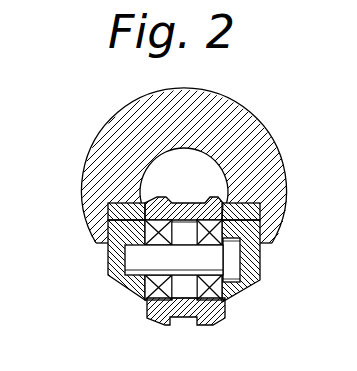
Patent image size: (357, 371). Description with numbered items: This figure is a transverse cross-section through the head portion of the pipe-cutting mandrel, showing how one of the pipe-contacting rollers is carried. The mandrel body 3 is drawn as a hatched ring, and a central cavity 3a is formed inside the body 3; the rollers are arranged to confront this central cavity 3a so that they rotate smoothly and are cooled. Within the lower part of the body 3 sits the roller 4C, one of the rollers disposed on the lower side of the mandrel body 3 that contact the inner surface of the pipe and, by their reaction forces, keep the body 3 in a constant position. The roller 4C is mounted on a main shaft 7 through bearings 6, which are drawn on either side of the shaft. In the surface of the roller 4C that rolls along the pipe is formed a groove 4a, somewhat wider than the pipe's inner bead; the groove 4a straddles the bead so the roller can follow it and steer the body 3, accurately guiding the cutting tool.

The body 3 is at (122, 128).
The central cavity 3a is at (150, 177).
The groove 4a is at (170, 321).
The roller 4C is at (216, 321).
The bearings 6 is at (149, 293).
The main shaft 7 is at (135, 261).